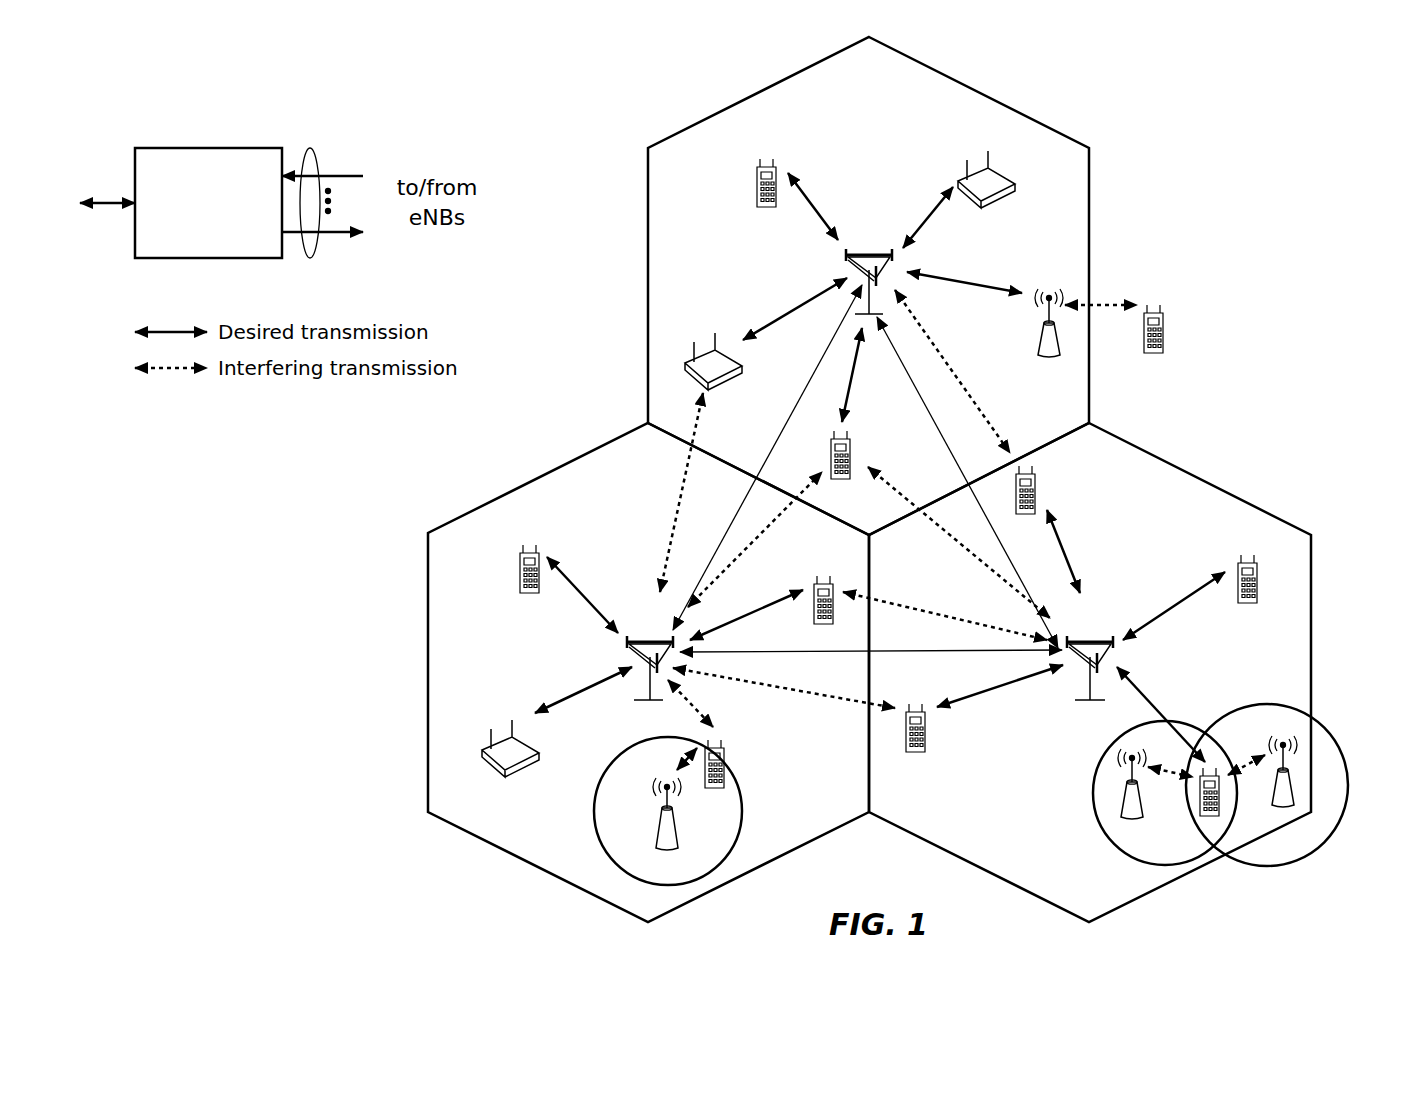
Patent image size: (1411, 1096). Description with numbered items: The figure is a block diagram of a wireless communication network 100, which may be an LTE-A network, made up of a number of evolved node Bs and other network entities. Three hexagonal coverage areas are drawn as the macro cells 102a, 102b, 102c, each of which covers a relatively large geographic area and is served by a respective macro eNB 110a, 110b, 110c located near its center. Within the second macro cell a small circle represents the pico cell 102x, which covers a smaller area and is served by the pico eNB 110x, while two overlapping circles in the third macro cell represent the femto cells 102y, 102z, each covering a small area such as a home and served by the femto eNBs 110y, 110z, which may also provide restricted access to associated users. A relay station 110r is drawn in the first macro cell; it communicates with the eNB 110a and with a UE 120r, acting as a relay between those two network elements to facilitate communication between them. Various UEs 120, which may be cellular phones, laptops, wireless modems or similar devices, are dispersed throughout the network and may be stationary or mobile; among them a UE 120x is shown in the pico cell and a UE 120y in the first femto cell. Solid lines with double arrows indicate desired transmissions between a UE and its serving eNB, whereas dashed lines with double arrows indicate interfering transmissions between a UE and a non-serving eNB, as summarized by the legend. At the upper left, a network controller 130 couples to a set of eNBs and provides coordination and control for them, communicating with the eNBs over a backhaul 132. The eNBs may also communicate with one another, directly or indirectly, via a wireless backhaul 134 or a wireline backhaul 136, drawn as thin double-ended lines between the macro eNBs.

The wireless communication network 100 is at (1239, 110).
The macro cell 102a is at (995, 80).
The macro cell 102b is at (536, 477).
The macro cell 102c is at (1212, 466).
The pico cell 102x is at (618, 752).
The femto cell 102y is at (1097, 757).
The femto cell 102z is at (1258, 700).
The macro eNB 110a is at (869, 252).
The macro eNB 110b is at (652, 626).
The macro eNB 110c is at (1092, 638).
The relay station 110r is at (1036, 342).
The pico eNB 110x is at (688, 859).
The femto eNB 110y is at (1142, 812).
The femto eNB 110z is at (1305, 816).
The UE 120 is at (757, 173).
The UE 120r is at (1163, 343).
The UE 120x is at (724, 756).
The UE 120y is at (1200, 814).
The network controller 130 is at (204, 147).
The backhaul 132 is at (317, 147).
The wireless backhaul 134 is at (762, 457).
The wireline backhaul 136 is at (935, 455).